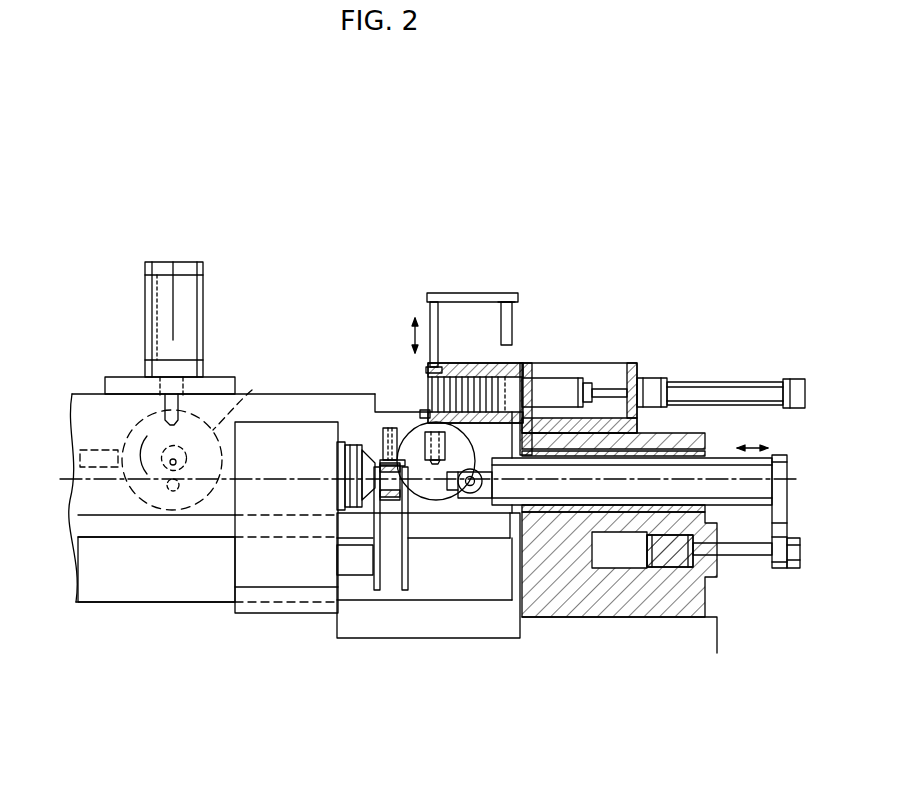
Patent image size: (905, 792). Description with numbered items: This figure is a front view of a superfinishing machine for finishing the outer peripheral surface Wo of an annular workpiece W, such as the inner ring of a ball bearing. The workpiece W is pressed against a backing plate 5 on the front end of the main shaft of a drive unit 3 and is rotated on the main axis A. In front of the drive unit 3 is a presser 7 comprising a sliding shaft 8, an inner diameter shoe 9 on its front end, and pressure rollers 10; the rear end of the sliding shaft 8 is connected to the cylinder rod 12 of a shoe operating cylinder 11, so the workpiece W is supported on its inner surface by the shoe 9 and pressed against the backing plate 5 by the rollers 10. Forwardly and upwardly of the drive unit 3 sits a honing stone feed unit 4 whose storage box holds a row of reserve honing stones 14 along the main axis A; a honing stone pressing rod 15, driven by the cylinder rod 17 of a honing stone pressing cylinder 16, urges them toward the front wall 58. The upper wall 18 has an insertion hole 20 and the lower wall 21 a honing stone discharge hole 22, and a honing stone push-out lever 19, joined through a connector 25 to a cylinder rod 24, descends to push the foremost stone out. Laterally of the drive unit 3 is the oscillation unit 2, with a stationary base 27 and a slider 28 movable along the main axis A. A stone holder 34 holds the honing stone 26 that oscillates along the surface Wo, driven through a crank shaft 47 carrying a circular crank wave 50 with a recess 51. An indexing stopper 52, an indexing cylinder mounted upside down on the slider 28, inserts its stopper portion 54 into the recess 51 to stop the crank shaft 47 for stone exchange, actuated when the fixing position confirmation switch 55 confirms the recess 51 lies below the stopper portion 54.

The oscillation unit 2 is at (93, 523).
The drive unit 3 is at (247, 570).
The honing stone feed unit 4 is at (502, 363).
The backing plate 5 is at (345, 480).
The presser 7 is at (573, 520).
The sliding shaft 8 is at (538, 520).
The inner diameter shoe 9 is at (438, 520).
The pressure rollers 10 is at (463, 520).
The shoe operating cylinder 11 is at (625, 557).
The cylinder rod 12 is at (750, 555).
The reserve honing stones 14 is at (460, 378).
The honing stone pressing rod 15 is at (560, 383).
The honing stone pressing cylinder 16 is at (703, 378).
The cylinder rod 17 is at (612, 390).
The upper wall 18 is at (478, 363).
The honing stone push-out lever 19 is at (437, 323).
The insertion hole 20 is at (432, 353).
The lower wall 21 is at (483, 520).
The honing stone discharge hole 22 is at (420, 425).
The cylinder rod 24 is at (512, 318).
The connector 25 is at (463, 297).
The honing stone 26 is at (410, 522).
The stationary base 27 is at (120, 567).
The slider 28 is at (115, 403).
The stone holder 34 is at (395, 440).
The crank shaft 47 is at (240, 448).
The crank wave 50 is at (252, 390).
The recess 51 is at (162, 395).
The indexing stopper 52 is at (195, 293).
The stopper portion 54 is at (186, 400).
The fixing position confirmation switch 55 is at (87, 450).
The front wall 58 is at (425, 408).
The main axis A is at (68, 483).
The annular workpiece W is at (378, 482).
The outer peripheral surface Wo is at (384, 500).